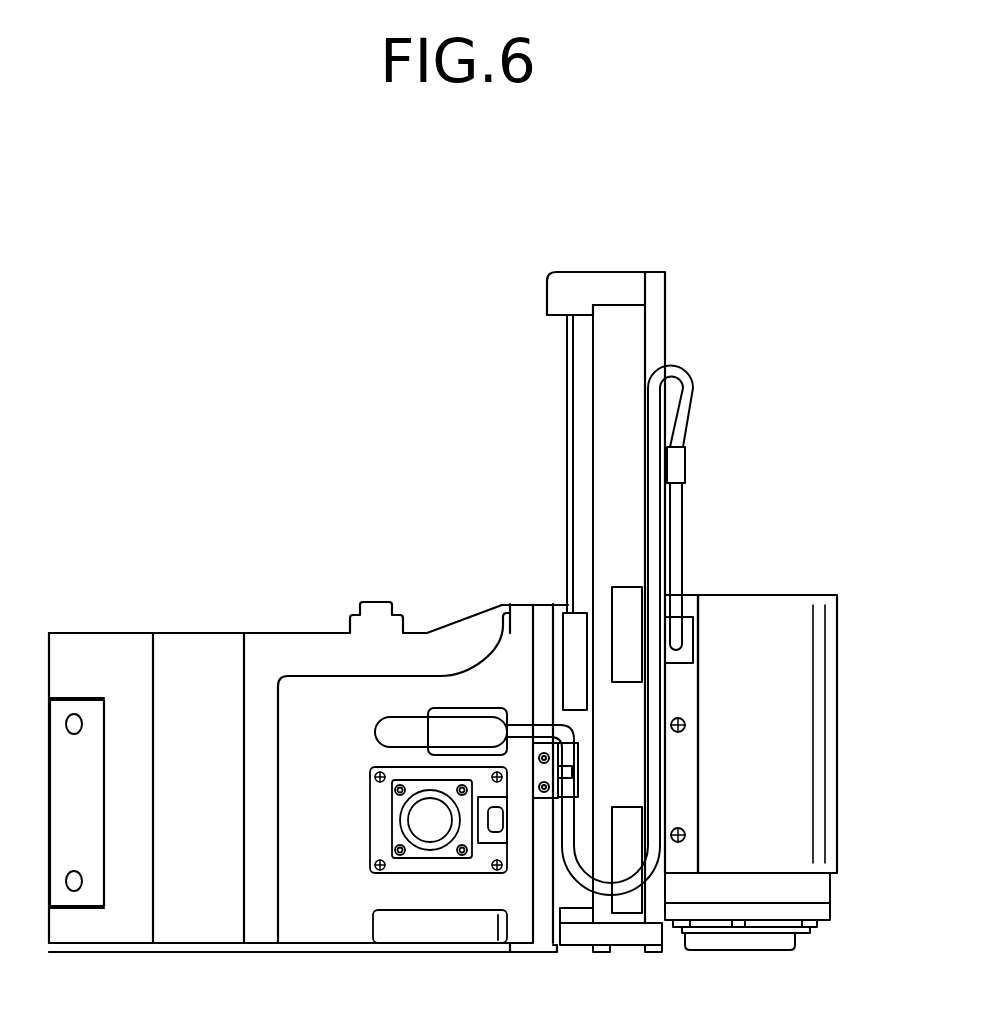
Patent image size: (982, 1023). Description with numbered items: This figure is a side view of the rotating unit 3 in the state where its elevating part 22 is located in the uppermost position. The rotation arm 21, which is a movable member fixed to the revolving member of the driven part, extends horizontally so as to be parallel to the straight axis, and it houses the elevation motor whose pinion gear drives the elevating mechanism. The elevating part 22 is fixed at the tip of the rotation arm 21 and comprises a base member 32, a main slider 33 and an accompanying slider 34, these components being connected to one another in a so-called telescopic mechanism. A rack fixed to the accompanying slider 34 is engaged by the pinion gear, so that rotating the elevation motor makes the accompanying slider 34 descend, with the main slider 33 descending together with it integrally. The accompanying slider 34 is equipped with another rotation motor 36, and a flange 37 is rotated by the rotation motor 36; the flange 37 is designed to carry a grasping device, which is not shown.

The rotating unit 3 is at (355, 556).
The rotation arm 21 is at (321, 953).
The elevating part 22 is at (733, 503).
The base member 32 is at (548, 603).
The main slider 33 is at (617, 272).
The accompanying slider 34 is at (665, 298).
The rotation motor 36 is at (837, 745).
The flange 37 is at (735, 951).